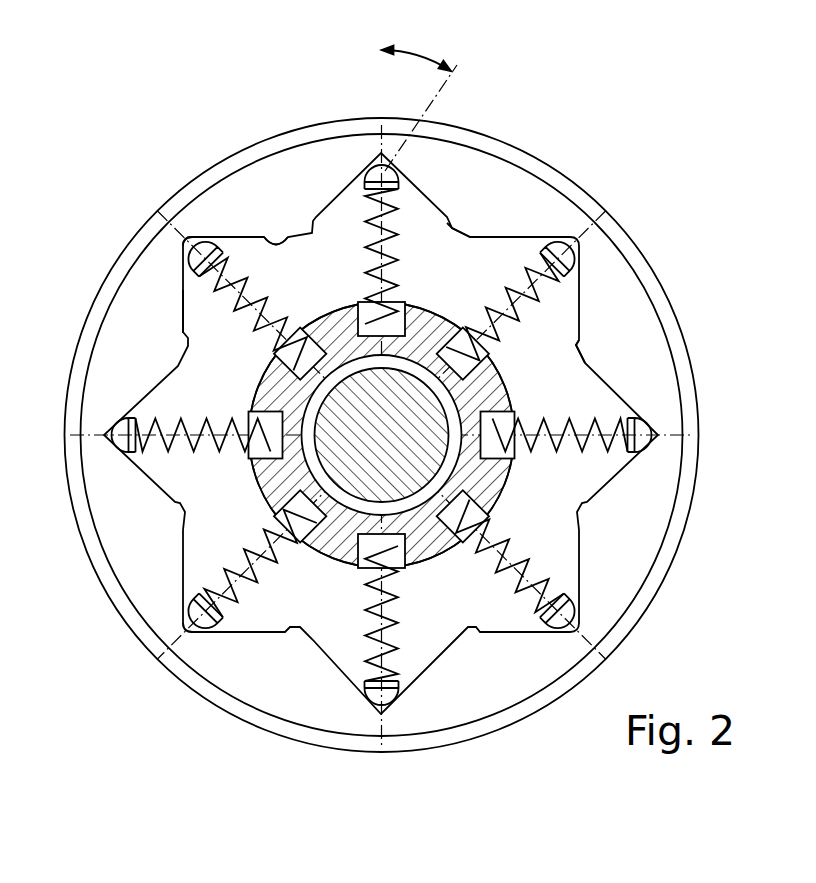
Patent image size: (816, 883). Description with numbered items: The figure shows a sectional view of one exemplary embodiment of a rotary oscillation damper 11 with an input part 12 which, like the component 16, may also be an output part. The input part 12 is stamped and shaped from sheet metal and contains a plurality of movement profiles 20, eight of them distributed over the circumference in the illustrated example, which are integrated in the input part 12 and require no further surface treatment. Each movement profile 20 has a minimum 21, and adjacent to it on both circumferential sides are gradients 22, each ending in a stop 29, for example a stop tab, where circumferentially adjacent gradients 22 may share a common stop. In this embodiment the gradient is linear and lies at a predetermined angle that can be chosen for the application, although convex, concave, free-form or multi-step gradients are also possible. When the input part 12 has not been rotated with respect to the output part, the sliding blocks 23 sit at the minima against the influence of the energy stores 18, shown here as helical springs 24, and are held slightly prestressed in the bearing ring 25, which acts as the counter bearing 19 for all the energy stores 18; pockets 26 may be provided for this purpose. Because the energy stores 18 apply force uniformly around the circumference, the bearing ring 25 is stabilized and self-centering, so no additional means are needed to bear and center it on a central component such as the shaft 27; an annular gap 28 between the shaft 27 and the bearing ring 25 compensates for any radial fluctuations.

The rotary oscillation damper 11 is at (381, 405).
The input part 12 is at (95, 327).
The component 16 is at (248, 142).
The energy stores 18 is at (414, 605).
The counter bearing 19 is at (458, 338).
The movement profiles 20 is at (473, 193).
The minimum 21 is at (185, 240).
The gradients 22 is at (263, 246).
The sliding blocks 23 is at (577, 617).
The helical springs 24 is at (548, 576).
The bearing ring 25 is at (283, 488).
The pockets 26 is at (507, 377).
The shaft 27 is at (447, 463).
The annular gap 28 is at (453, 473).
The stop 29 is at (478, 236).